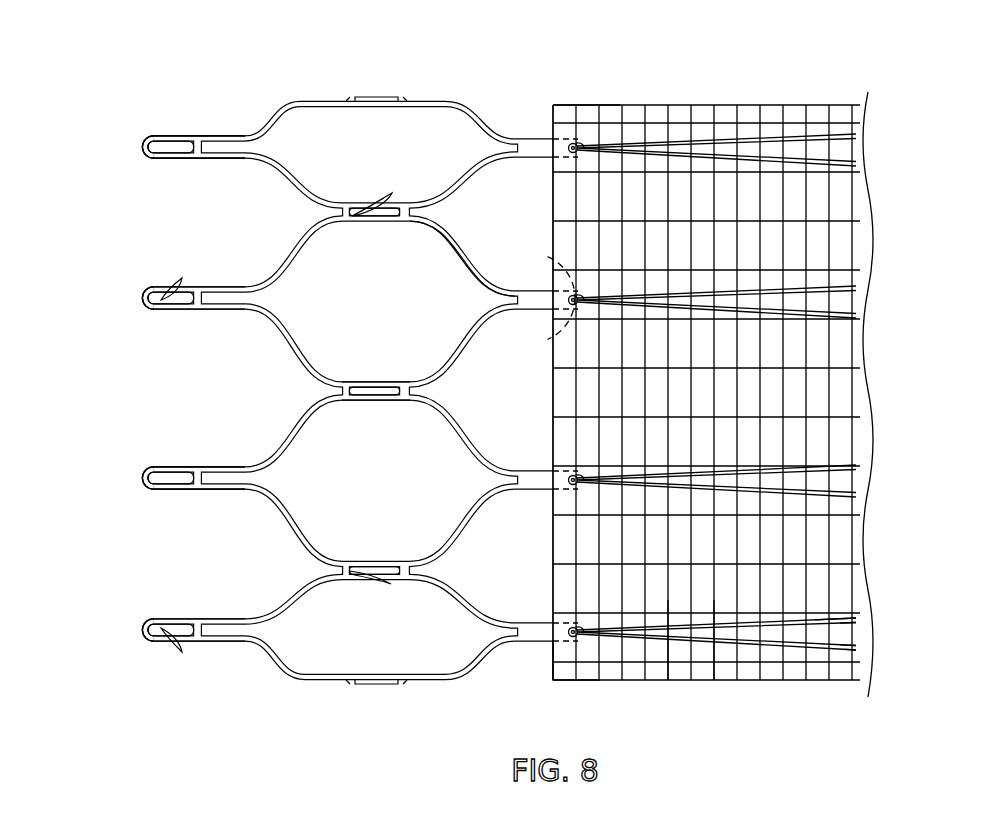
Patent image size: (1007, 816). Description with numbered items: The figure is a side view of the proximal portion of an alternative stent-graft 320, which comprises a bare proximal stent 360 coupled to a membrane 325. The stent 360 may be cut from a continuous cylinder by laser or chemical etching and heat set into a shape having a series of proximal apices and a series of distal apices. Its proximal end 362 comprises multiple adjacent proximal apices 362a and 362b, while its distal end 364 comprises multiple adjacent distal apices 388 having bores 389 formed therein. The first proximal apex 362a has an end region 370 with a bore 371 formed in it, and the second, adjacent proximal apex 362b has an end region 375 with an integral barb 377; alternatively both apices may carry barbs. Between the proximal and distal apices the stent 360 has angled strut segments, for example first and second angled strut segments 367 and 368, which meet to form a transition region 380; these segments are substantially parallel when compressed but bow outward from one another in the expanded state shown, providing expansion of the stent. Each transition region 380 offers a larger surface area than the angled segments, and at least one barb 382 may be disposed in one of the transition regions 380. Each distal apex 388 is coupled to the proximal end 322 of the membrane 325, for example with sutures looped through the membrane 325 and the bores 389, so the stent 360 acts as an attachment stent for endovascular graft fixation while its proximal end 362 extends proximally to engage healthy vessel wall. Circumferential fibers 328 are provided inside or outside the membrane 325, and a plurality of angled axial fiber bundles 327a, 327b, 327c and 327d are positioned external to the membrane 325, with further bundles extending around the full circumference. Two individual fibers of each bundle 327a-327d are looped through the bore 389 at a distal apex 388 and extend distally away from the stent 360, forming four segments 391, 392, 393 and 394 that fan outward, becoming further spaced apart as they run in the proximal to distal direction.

The stent-graft 320 is at (128, 62).
The proximal end of the membrane 322 is at (564, 660).
The membrane 325 is at (700, 132).
The angled axial fiber bundle 327a is at (877, 152).
The angled axial fiber bundle 327b is at (877, 296).
The angled axial fiber bundle 327c is at (877, 484).
The angled axial fiber bundle 327d is at (770, 648).
The circumferential fibers 328 is at (712, 655).
The bare proximal stent 360 is at (376, 78).
The proximal end of the stent 362 is at (187, 122).
The first proximal apex 362a is at (138, 315).
The second proximal apex 362b is at (138, 465).
The distal end of the stent 364 is at (553, 96).
The first angled strut segment 367 is at (452, 362).
The second angled strut segment 368 is at (470, 240).
The end region 370 is at (164, 160).
The bore 371 is at (135, 149).
The end region 375 is at (150, 303).
The integral barb 377 is at (135, 299).
The transition region 380 is at (373, 222).
The barb 382 is at (392, 197).
The distal apex 388 is at (547, 253).
The bore 389 is at (550, 345).
The segment 391 is at (818, 613).
The segment 392 is at (848, 628).
The segment 393 is at (855, 635).
The segment 394 is at (868, 666).